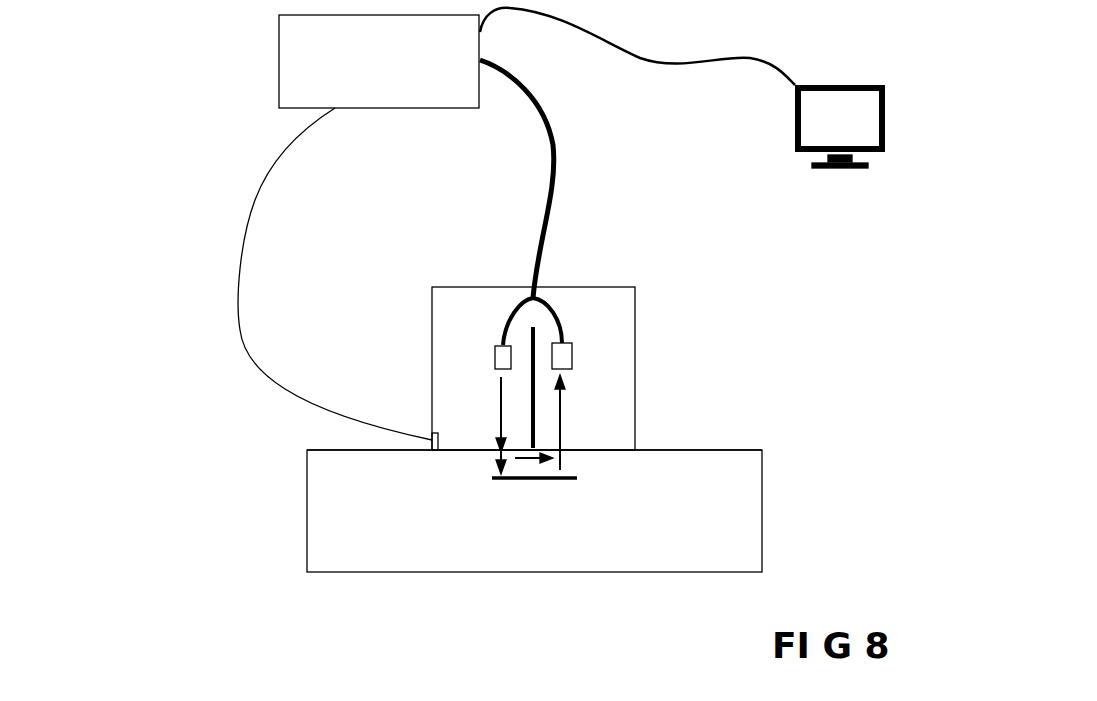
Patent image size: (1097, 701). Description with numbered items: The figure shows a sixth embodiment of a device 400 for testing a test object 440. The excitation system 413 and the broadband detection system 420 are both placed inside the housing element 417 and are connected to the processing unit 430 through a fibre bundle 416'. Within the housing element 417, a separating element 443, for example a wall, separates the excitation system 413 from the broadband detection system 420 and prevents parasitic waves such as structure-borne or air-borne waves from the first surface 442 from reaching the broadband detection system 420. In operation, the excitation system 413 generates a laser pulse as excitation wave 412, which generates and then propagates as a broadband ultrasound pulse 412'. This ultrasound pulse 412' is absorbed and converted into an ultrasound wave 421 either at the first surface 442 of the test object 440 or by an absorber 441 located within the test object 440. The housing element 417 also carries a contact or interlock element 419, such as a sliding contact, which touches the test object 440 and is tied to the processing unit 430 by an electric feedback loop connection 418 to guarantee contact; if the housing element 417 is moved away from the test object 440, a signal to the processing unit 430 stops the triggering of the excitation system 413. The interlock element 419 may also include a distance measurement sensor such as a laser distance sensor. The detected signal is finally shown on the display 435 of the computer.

The device 400 is at (215, 95).
The feedback loop connection 418 is at (250, 218).
The processing unit 430 is at (480, 47).
The fibre bundle 416' is at (606, 179).
The display 435 is at (795, 130).
The separating element 443 is at (530, 360).
The broadband detection system 420 is at (573, 343).
The excitation system 413 is at (495, 352).
The housing element 417 is at (635, 375).
The excitation wave 412 is at (396, 390).
The interlock element 419 is at (432, 440).
The first surface 442 is at (330, 450).
The test object 440 is at (730, 477).
The ultrasound pulse 412' is at (316, 488).
The ultrasound wave 421 is at (565, 438).
The absorber 441 is at (577, 478).